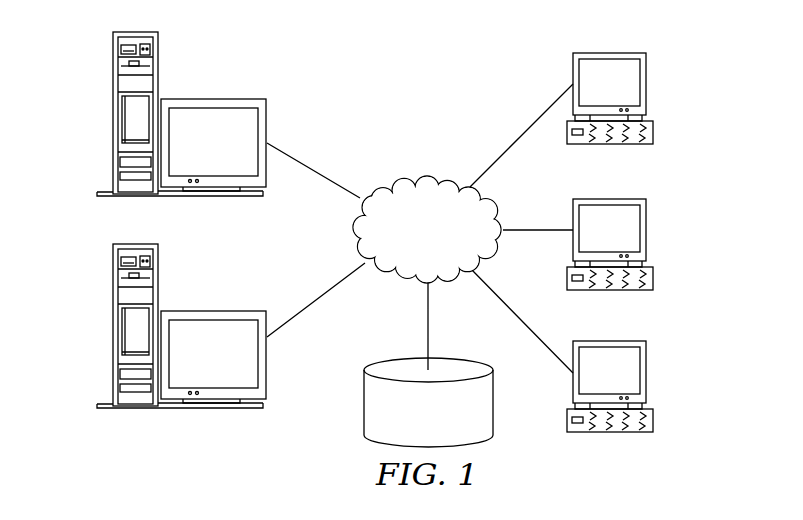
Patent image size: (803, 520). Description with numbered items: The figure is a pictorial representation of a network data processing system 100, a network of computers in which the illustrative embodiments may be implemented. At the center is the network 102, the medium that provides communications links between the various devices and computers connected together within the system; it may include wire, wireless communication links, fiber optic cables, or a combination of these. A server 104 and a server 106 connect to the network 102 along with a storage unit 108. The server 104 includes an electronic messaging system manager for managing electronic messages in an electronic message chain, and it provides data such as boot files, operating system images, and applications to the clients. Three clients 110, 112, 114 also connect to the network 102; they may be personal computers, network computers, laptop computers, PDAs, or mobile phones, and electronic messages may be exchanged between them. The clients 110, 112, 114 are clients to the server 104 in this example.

The network data processing system 100 is at (481, 73).
The network 102 is at (398, 182).
The server 104 is at (114, 113).
The server 106 is at (114, 327).
The storage unit 108 is at (364, 410).
The client 110 is at (647, 83).
The client 112 is at (647, 230).
The client 114 is at (647, 372).